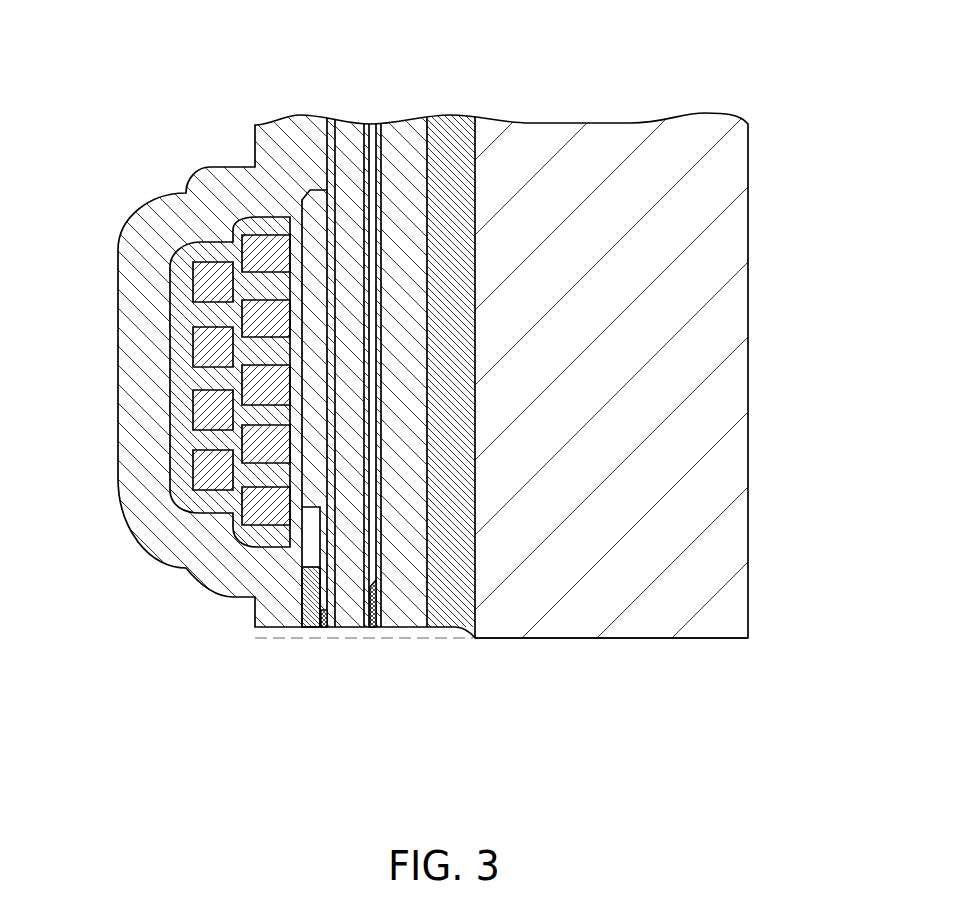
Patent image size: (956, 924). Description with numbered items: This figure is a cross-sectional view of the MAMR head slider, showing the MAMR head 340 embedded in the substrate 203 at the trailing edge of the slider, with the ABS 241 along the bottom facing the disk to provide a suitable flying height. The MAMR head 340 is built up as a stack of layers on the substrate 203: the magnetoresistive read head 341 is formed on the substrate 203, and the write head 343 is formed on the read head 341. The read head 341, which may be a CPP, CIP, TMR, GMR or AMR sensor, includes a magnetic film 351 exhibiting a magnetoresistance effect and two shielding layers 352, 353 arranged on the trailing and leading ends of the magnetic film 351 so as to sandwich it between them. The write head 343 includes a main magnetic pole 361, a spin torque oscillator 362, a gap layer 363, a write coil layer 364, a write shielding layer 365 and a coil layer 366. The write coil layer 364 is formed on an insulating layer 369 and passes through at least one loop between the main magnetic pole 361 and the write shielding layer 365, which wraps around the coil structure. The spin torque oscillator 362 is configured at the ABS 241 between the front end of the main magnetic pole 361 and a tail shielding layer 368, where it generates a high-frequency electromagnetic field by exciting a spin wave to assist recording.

The MAMR head 340 is at (232, 51).
The MR read head 341 is at (425, 643).
The write head 343 is at (320, 643).
The magnetic film 351 is at (382, 603).
The shielding layer 352 is at (373, 577).
The shielding layer 353 is at (382, 568).
The main magnetic pole 361 is at (332, 625).
The spin torque oscillator 362 is at (323, 625).
The gap layer 363 is at (305, 583).
The write coil layer 364 is at (210, 412).
The write shielding layer 365 is at (217, 567).
The coil layer 366 is at (270, 507).
The tail shielding layer 368 is at (310, 620).
The insulating layer 369 is at (186, 442).
The substrate 203 is at (740, 529).
The ABS 241 is at (702, 647).